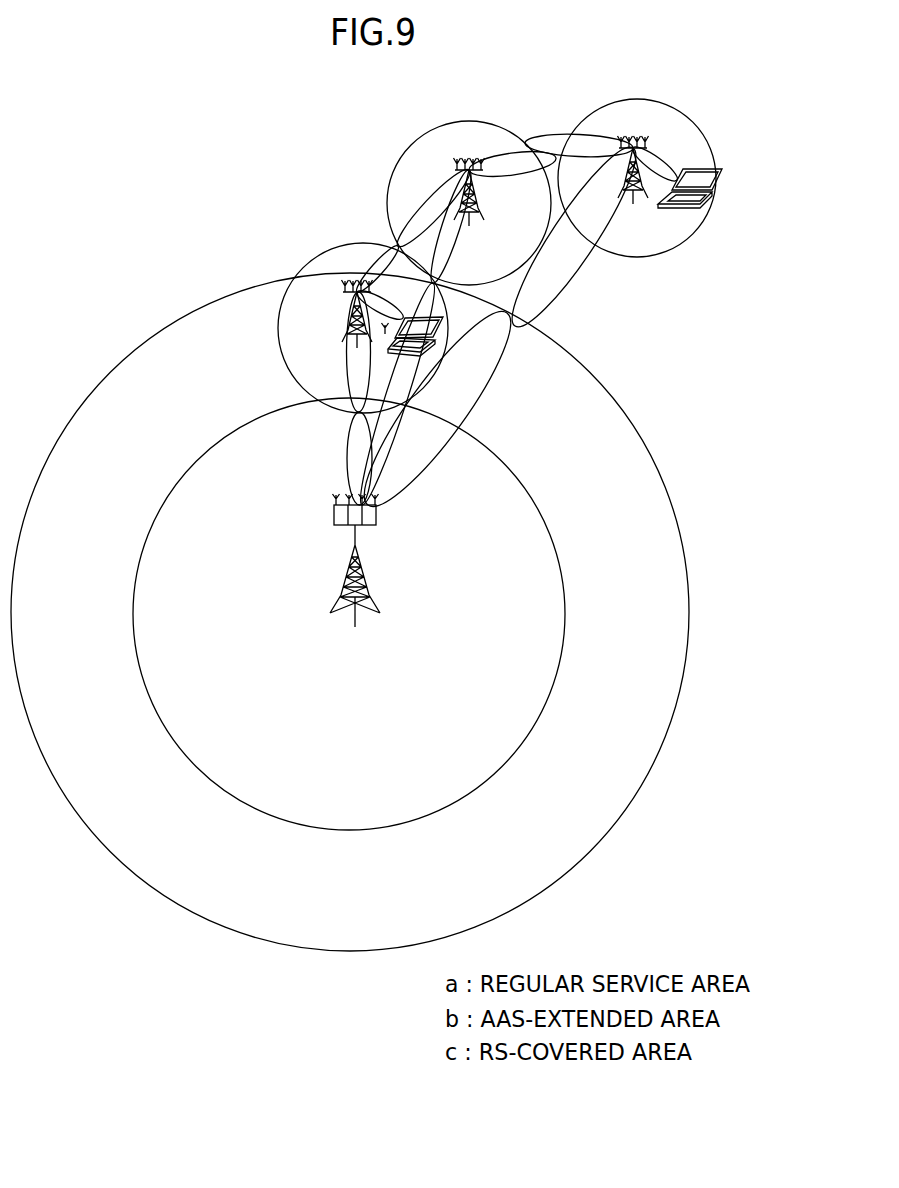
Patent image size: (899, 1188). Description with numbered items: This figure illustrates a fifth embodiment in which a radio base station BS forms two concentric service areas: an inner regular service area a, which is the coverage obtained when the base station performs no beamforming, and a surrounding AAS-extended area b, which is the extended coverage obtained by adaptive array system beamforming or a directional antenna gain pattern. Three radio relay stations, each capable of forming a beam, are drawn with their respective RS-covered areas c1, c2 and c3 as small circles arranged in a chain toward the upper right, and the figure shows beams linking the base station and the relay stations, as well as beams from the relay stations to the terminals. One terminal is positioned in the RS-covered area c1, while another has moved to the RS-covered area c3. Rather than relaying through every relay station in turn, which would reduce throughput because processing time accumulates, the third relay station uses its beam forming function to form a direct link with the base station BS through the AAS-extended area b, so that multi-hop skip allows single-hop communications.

The radio base station BS is at (355, 577).
The regular service area a is at (349, 614).
The AAS-extended area b is at (350, 612).
The RS-covered area c1 is at (363, 328).
The RS-covered area c2 is at (469, 203).
The RS-covered area c3 is at (637, 178).